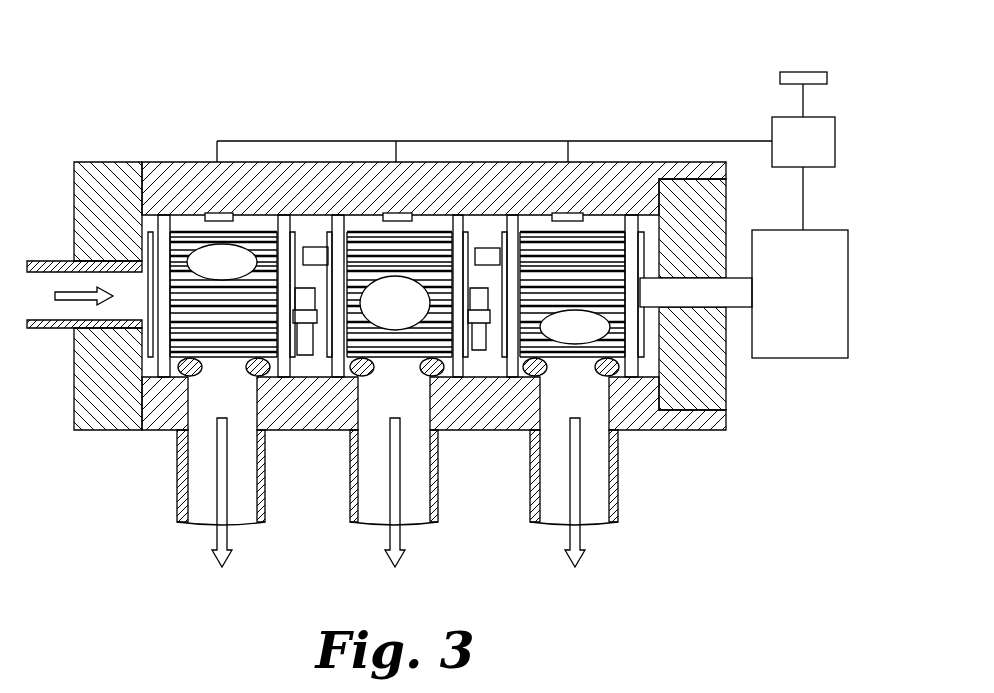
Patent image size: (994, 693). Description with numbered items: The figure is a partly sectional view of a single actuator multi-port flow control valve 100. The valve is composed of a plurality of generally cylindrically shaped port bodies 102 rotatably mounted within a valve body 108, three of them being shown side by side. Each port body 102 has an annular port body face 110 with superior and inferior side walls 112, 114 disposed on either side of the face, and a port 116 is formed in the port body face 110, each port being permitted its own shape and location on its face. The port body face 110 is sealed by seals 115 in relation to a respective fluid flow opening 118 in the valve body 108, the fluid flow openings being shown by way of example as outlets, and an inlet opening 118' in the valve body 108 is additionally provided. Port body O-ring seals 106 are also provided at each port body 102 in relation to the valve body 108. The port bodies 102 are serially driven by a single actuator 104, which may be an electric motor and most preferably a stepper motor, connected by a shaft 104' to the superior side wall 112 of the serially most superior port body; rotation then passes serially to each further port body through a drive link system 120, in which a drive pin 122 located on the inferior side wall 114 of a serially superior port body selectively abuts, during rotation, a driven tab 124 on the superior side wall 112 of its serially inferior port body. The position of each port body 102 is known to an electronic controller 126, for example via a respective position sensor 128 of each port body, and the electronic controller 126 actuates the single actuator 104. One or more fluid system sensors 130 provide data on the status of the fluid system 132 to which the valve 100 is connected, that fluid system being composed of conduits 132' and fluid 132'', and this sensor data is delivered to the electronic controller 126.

The single actuator multi-port flow control valve 100 is at (170, 121).
The port body 102 is at (245, 222).
The single actuator 104 is at (800, 341).
The shaft 104' is at (716, 336).
The port body O-ring seal 106 is at (165, 230).
The valve body 108 is at (586, 156).
The port body face 110 is at (198, 232).
The superior side wall 112 is at (306, 360).
The inferior side wall 114 is at (148, 342).
The seal 115 is at (270, 376).
The port 116 is at (205, 273).
The fluid flow opening 118 is at (425, 484).
The inlet opening 118' is at (84, 369).
The drive link system 120 is at (313, 362).
The drive pin 122 is at (313, 247).
The driven tab 124 is at (293, 337).
The electronic controller 126 is at (770, 128).
The position sensor 128 is at (205, 213).
The fluid system sensor 130 is at (800, 72).
The fluid system 132 is at (100, 400).
The conduit 132' is at (340, 385).
The fluid 132'' is at (330, 387).